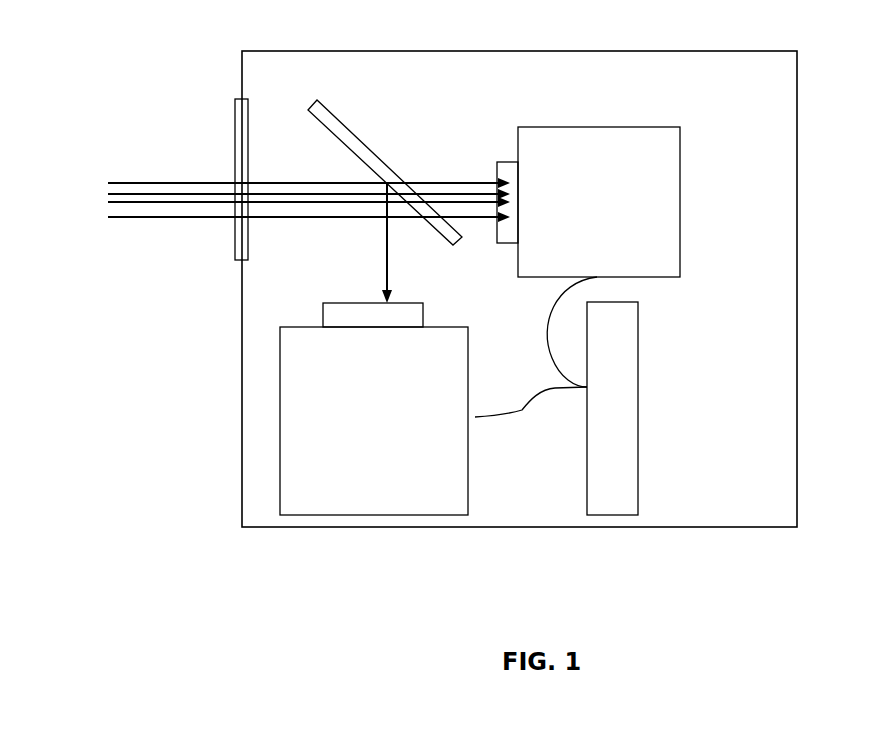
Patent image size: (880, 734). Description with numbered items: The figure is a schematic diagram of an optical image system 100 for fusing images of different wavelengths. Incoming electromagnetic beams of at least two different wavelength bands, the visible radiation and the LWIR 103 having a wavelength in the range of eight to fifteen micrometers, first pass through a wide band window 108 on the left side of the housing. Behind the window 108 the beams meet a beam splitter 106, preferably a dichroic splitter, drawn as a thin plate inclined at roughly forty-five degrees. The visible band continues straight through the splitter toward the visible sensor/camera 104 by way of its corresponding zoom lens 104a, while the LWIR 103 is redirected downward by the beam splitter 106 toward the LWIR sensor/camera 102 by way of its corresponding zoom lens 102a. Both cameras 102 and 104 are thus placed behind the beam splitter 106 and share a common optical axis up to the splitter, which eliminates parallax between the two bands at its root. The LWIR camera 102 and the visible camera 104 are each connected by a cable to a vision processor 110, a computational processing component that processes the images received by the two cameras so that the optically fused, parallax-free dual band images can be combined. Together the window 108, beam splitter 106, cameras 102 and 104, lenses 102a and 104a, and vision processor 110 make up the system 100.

The optical image system 100 is at (758, 570).
The LWIR sensor/camera 102 is at (380, 492).
The zoom lens 102a is at (342, 313).
The LWIR radiation 103 is at (380, 242).
The visible sensor/camera 104 is at (650, 212).
The zoom lens 104a is at (505, 178).
The beam splitter 106 is at (357, 148).
The wide band window 108 is at (235, 157).
The vision processor 110 is at (623, 427).